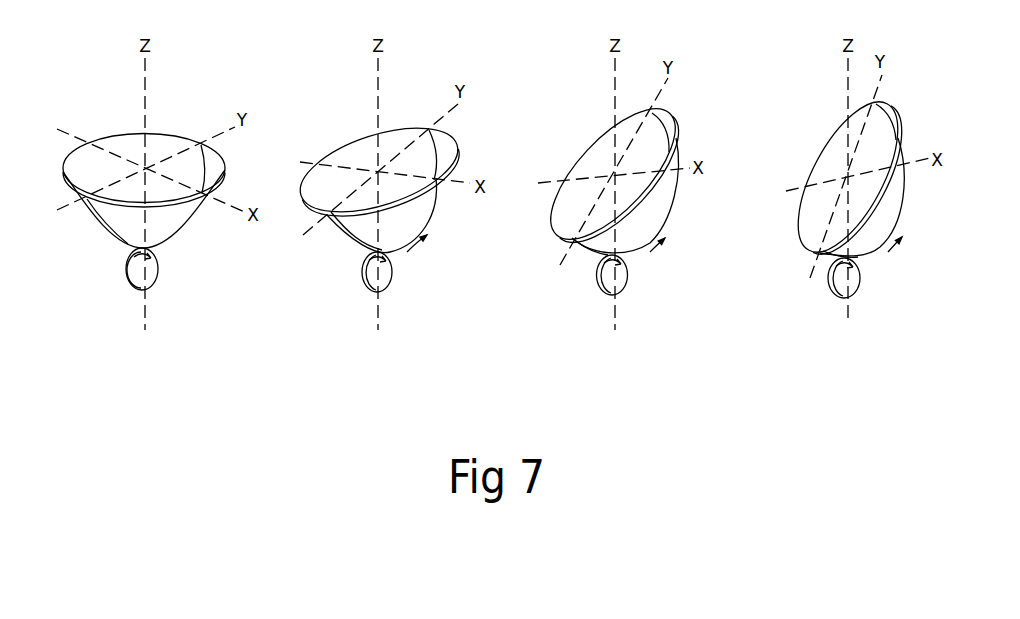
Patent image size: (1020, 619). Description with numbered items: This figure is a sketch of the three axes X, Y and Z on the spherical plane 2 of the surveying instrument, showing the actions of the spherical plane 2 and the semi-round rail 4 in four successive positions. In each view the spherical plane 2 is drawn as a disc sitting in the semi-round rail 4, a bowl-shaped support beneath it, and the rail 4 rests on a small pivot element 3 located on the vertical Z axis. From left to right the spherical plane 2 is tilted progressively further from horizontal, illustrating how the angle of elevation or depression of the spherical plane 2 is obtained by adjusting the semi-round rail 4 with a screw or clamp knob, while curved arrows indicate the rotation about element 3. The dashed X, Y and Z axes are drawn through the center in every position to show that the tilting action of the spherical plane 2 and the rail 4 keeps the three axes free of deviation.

The spherical plane 2 is at (163, 142).
The ball (pivot) 3 is at (137, 283).
The semi-round rail 4 is at (192, 225).